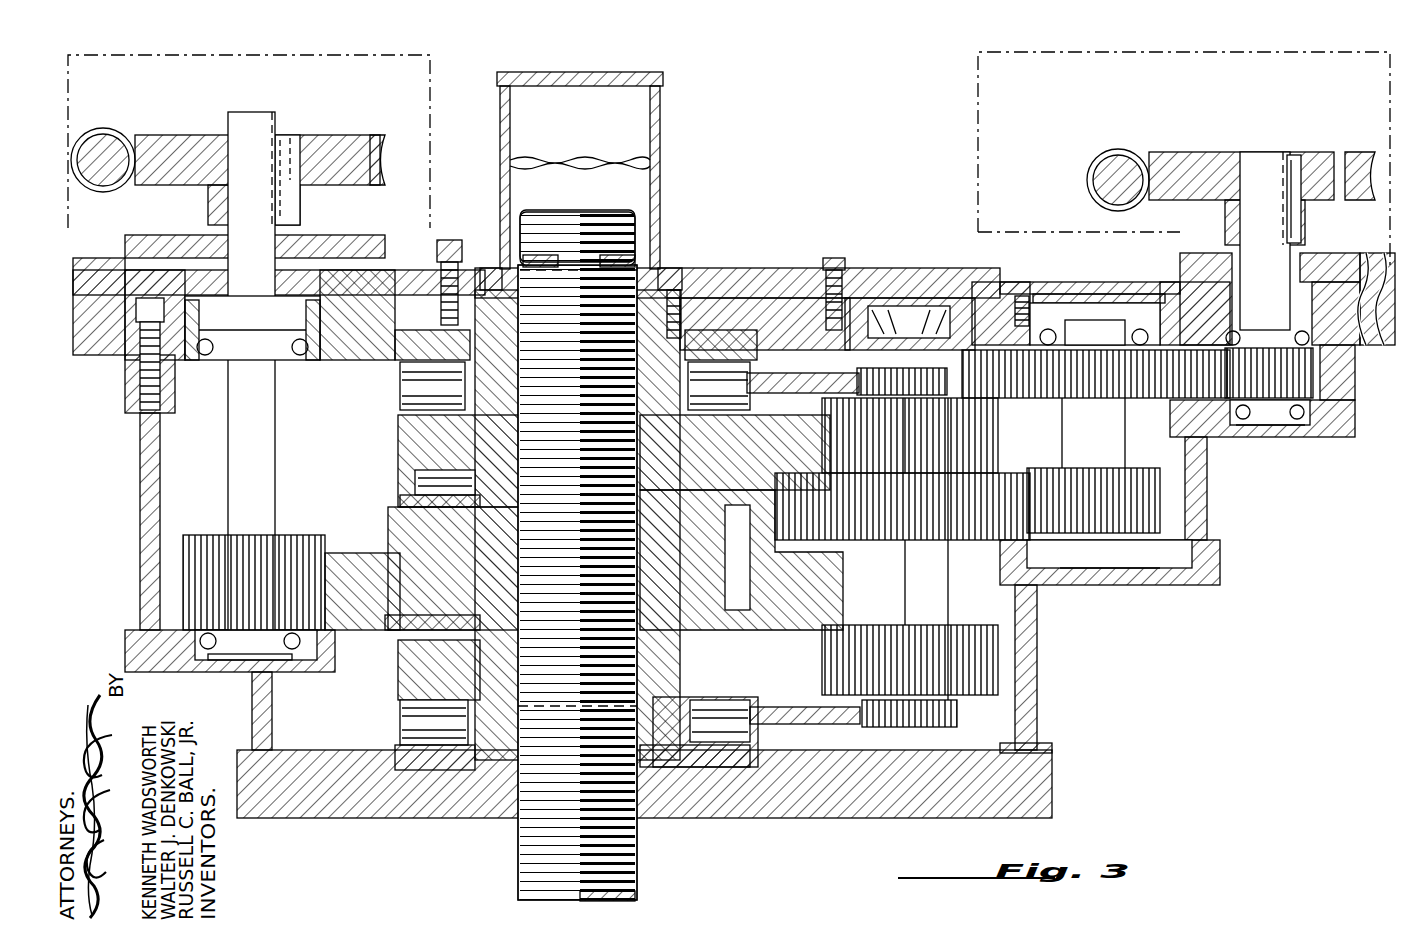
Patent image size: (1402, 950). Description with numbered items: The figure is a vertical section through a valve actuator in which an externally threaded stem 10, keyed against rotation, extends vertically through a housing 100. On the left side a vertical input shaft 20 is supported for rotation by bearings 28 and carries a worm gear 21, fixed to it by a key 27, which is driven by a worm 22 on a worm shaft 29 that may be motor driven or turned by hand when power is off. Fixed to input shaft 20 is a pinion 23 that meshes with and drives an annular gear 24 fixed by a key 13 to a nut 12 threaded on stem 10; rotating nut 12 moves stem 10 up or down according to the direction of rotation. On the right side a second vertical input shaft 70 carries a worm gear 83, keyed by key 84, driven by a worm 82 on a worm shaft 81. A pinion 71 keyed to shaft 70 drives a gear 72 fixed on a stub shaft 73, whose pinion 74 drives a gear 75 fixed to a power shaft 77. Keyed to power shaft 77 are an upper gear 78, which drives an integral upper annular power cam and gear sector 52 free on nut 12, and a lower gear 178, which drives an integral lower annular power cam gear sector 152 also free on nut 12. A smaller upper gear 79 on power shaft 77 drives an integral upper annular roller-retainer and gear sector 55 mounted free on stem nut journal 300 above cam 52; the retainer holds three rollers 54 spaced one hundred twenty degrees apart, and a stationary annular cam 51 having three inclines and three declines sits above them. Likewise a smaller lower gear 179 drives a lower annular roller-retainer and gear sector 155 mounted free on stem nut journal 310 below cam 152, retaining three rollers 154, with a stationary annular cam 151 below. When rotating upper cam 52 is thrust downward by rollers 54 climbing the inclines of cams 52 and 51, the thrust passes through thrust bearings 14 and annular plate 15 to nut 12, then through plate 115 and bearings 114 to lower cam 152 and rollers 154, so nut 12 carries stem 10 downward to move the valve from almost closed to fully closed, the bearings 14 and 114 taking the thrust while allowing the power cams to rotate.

The externally threaded stem 10 is at (612, 830).
The nut 12 is at (478, 556).
The key 13 is at (742, 548).
The thrust bearings 14 is at (425, 478).
The annular plate 15 is at (410, 499).
The vertical input shaft 20 is at (268, 474).
The worm gear 21 is at (346, 152).
The worm 22 is at (104, 131).
The pinion 23 is at (276, 556).
The annular gear 24 is at (352, 576).
The key 27 is at (283, 142).
The bearings 28 is at (212, 348).
The worm shaft 29 is at (96, 176).
The stationary annular cam 51 is at (422, 340).
The upper annular power cam and gear sector 52 is at (784, 432).
The rollers 54 is at (432, 393).
The upper annular roller-retainer and gear sector 55 is at (792, 372).
The vertical input shaft 70 is at (1258, 178).
The pinion 71 is at (1278, 385).
The gear 72 is at (1145, 375).
The stub shaft 73 is at (1078, 432).
The pinion 74 is at (1120, 490).
The gear 75 is at (1005, 510).
The power shaft 77 is at (928, 597).
The upper gear 78 is at (972, 440).
The upper gear 79 is at (866, 378).
The worm shaft 81 is at (1107, 175).
The worm 82 is at (1115, 147).
The worm gear 83 is at (1185, 172).
The key 84 is at (1295, 192).
The housing 100 is at (748, 303).
The bearings 114 is at (437, 642).
The plate 115 is at (430, 621).
The stationary annular cam 151 is at (420, 765).
The lower annular power cam gear sector 152 is at (787, 675).
The rollers 154 is at (428, 716).
The lower annular roller-retainer and gear sector 155 is at (780, 680).
The lower gear 178 is at (970, 664).
The lower gear 179 is at (960, 712).
The stem nut journal 300 is at (690, 355).
The stem nut journal 310 is at (665, 768).